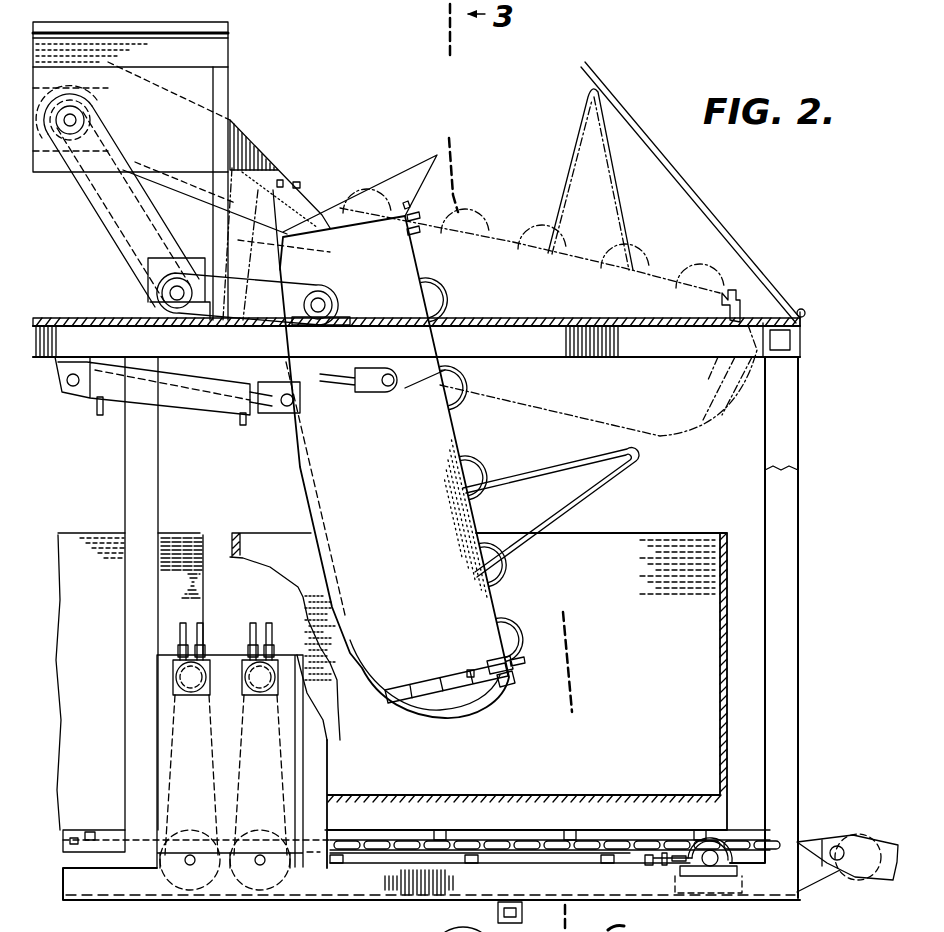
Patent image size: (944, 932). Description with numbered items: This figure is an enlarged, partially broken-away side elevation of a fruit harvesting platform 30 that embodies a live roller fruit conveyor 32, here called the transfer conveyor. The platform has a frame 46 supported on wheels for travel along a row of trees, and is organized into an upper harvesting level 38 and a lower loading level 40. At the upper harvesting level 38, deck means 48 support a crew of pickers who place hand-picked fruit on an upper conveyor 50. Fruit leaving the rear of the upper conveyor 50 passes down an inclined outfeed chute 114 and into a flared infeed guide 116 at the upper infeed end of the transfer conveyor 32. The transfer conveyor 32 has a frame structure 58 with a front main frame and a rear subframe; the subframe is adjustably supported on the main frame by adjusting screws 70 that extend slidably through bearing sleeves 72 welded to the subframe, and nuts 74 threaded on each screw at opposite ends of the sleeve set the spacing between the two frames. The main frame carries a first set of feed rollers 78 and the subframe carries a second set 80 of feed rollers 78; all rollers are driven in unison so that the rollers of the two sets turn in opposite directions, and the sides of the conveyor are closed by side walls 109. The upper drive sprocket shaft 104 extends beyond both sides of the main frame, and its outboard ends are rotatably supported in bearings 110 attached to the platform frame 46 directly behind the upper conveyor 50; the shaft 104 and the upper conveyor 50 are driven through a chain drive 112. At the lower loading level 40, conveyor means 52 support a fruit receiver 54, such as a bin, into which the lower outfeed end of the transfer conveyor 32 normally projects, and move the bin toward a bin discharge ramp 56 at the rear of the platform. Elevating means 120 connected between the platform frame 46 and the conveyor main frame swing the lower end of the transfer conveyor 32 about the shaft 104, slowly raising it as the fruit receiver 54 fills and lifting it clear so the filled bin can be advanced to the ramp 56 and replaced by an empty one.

The fruit harvesting platform 30 is at (254, 55).
The conveyor 50 is at (232, 92).
The chain drive 112 is at (98, 203).
The deck means 48 is at (73, 318).
The outfeed chute 114 is at (262, 162).
The infeed guide 116 is at (379, 185).
The shaft 104 is at (322, 302).
The bearings 110 is at (347, 318).
The frame 46 is at (804, 372).
The lower loading level 40 is at (812, 663).
The elevating means 120 is at (214, 412).
The side walls 109 is at (678, 452).
The feed rollers 78 is at (686, 280).
The second set of feed rollers 80 is at (508, 583).
The live roller fruit conveyor 32 is at (538, 236).
The upper harvesting level 38 is at (798, 226).
The fruit receiver 54 is at (660, 533).
The frame structure 58 is at (420, 716).
The adjusting screws 70 is at (447, 697).
The bearing sleeves 72 is at (508, 690).
The nuts 74 is at (515, 670).
The conveyor means 52 is at (418, 850).
The bin discharge ramp 56 is at (858, 836).